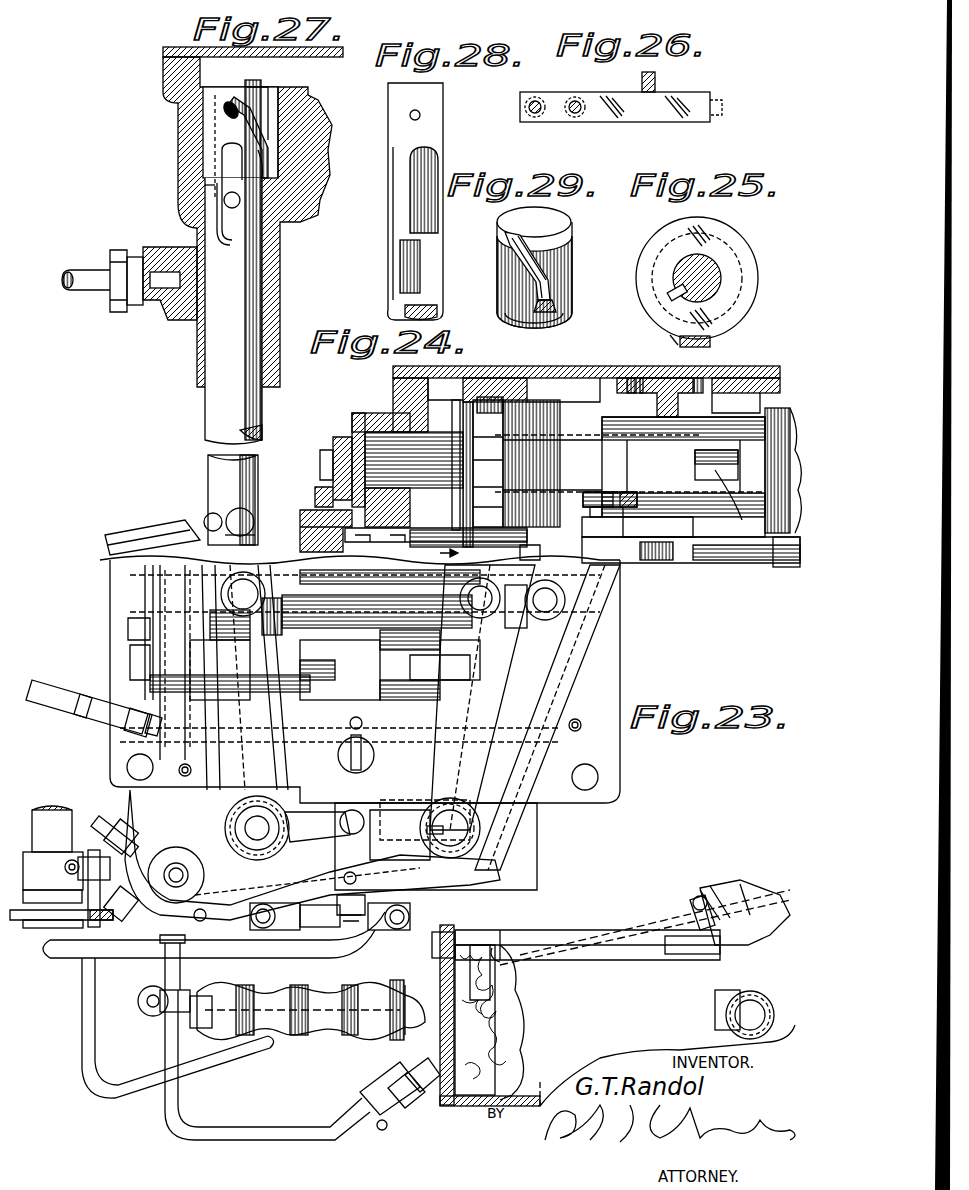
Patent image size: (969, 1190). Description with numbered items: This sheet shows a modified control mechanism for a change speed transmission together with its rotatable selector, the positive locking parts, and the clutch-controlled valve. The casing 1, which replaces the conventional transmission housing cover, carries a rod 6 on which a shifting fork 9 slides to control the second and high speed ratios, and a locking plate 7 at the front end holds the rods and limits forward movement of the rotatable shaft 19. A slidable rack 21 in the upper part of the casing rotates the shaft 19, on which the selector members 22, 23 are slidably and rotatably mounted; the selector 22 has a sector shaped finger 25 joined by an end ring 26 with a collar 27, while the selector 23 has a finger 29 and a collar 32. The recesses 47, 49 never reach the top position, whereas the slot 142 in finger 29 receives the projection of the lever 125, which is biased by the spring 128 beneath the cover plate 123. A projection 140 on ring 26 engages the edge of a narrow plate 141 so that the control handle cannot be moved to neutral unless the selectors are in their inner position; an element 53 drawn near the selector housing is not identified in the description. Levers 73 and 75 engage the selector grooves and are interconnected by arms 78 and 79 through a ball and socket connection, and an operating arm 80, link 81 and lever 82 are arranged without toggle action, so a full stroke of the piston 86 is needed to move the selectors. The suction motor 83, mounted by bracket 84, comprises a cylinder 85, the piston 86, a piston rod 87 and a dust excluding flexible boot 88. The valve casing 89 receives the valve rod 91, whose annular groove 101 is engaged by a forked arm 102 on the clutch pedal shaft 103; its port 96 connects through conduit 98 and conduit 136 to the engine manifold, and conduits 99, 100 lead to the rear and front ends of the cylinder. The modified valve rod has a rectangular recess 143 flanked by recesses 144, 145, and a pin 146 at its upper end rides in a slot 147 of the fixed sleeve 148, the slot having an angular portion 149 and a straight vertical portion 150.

In FIG. 23, the casing 1 is at (545, 728).
In FIG. 23, the rod 6 is at (448, 668).
In FIG. 24, the locking plate 7 is at (353, 418).
In FIG. 23, the shifting fork 9 is at (380, 670).
In FIG. 25, the rotatable shaft 19 is at (722, 270).
In FIG. 24, the rotatable shaft 19 is at (437, 476).
In FIG. 23, the rotatable shaft 19 is at (568, 602).
In FIG. 23, the slidable rack 21 is at (528, 640).
In FIG. 24, the selector member 22 is at (522, 398).
In FIG. 23, the selector member 22 is at (275, 600).
In FIG. 24, the selector member 23 is at (776, 440).
In FIG. 23, the selector member 23 is at (450, 600).
In FIG. 24, the sector shaped finger 25 is at (455, 408).
In FIG. 25, the end ring 26 is at (752, 285).
In FIG. 24, the end ring 26 is at (465, 430).
In FIG. 23, the end ring 26 is at (284, 530).
In FIG. 24, the collar 27 is at (548, 438).
In FIG. 24, the sector shaped finger 29 is at (795, 410).
In FIG. 24, the collar 32 is at (778, 512).
In FIG. 24, the recess 47 is at (715, 468).
In FIG. 24, the recess 49 is at (604, 507).
In FIG. 24, the casing 53 is at (730, 565).
In FIG. 23, the lever 73 is at (452, 750).
In FIG. 23, the lever 75 is at (268, 737).
In FIG. 23, the arm 78 is at (395, 810).
In FIG. 23, the arm 79 is at (318, 810).
In FIG. 23, the operating arm 80 is at (410, 915).
In FIG. 23, the link 81 is at (362, 915).
In FIG. 23, the lever 82 is at (262, 930).
In FIG. 23, the suction motor 83 is at (584, 922).
In FIG. 23, the bracket 84 is at (432, 944).
In FIG. 23, the cylinder 85 is at (528, 1095).
In FIG. 23, the piston 86 is at (478, 1050).
In FIG. 23, the piston rod 87 is at (760, 922).
In FIG. 23, the flexible boot 88 is at (340, 1030).
In FIG. 27, the valve casing 89 is at (278, 262).
In FIG. 27, the valve rod 91 is at (255, 410).
In FIG. 23, the valve rod 91 is at (180, 860).
In FIG. 27, the port 96 is at (192, 323).
In FIG. 27, the conduit 98 is at (90, 283).
In FIG. 23, the conduit 98 is at (72, 955).
In FIG. 23, the conduit 99 is at (82, 1052).
In FIG. 23, the conduit 100 is at (205, 1130).
In FIG. 23, the annular groove 101 is at (245, 505).
In FIG. 23, the forked arm 102 is at (68, 852).
In FIG. 23, the clutch pedal shaft 103 is at (44, 815).
In FIG. 27, the cover plate 123 is at (172, 50).
In FIG. 24, the cover plate 123 is at (595, 373).
In FIG. 24, the lever 125 is at (660, 376).
In FIG. 23, the spring 128 is at (348, 724).
In FIG. 23, the conduit 136 is at (58, 692).
In FIG. 26, the projection 140 is at (725, 108).
In FIG. 25, the projection 140 is at (676, 342).
In FIG. 24, the projection 140 is at (436, 545).
In FIG. 27, the plate 141 is at (210, 192).
In FIG. 26, the plate 141 is at (662, 122).
In FIG. 25, the plate 141 is at (712, 343).
In FIG. 24, the plate 141 is at (530, 552).
In FIG. 24, the slot 142 is at (732, 440).
In FIG. 23, the slot 142 is at (380, 655).
In FIG. 27, the rectangular recess 143 is at (228, 232).
In FIG. 28, the rectangular recess 143 is at (412, 268).
In FIG. 28, the recess 144 is at (393, 216).
In FIG. 28, the recess 145 is at (430, 214).
In FIG. 27, the pin 146 is at (232, 106).
In FIG. 28, the pin 146 is at (420, 115).
In FIG. 26, the pin 146 is at (656, 80).
In FIG. 27, the slot 147 is at (272, 100).
In FIG. 29, the slot 147 is at (545, 272).
In FIG. 27, the fixed sleeve 148 is at (300, 118).
In FIG. 29, the fixed sleeve 148 is at (560, 235).
In FIG. 27, the angular portion 149 is at (262, 88).
In FIG. 29, the angular portion 149 is at (512, 252).
In FIG. 27, the straight vertical portion 150 is at (268, 150).
In FIG. 29, the straight vertical portion 150 is at (556, 295).